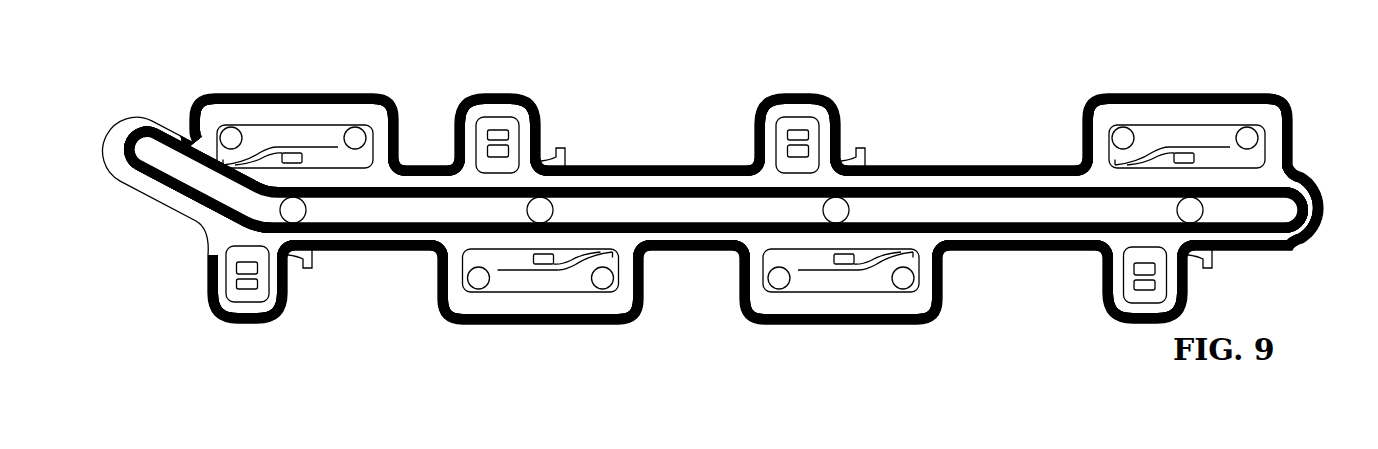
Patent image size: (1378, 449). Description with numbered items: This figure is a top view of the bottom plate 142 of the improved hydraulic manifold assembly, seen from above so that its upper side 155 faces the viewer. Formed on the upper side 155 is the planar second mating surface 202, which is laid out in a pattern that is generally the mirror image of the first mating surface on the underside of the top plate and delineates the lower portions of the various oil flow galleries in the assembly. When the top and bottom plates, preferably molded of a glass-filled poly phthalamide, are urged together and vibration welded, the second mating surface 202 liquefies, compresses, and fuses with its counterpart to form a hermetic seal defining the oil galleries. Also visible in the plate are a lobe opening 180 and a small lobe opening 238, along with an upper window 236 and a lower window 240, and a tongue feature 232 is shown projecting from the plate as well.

The bottom plate 142 is at (710, 190).
The upper side 155 is at (1283, 215).
The lobe opening 180 is at (328, 132).
The second mating surface 202 is at (975, 165).
The tongue feature 232 is at (290, 152).
The upper window 236 is at (240, 272).
The small lobe opening 238 is at (240, 257).
The lower window 240 is at (253, 287).